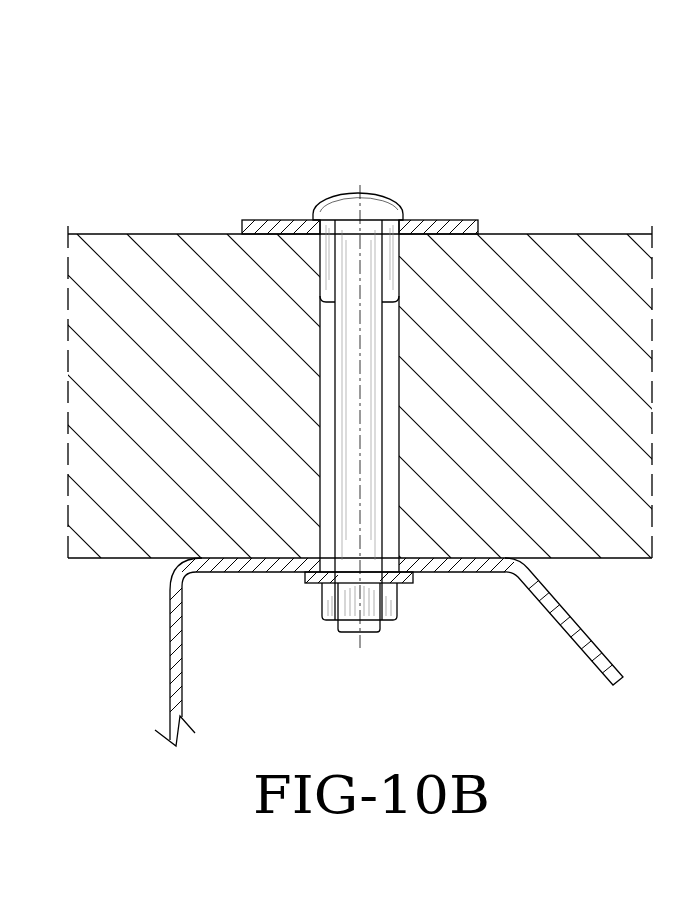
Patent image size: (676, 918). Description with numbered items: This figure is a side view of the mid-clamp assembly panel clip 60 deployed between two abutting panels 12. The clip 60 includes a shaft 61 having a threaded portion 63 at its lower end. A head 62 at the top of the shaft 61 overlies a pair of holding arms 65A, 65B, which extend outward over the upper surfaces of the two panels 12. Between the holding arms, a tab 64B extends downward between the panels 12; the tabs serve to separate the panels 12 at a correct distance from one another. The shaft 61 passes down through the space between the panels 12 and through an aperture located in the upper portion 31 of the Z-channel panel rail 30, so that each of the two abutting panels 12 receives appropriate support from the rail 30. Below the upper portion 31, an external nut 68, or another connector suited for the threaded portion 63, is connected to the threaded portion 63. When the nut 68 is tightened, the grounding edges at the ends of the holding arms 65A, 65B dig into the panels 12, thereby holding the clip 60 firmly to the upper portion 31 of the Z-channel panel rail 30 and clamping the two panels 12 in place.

The mid-clamp assembly panel clip 60 is at (326, 140).
The panel 12 is at (143, 283).
The holding arm 65A is at (240, 227).
The holding arm 65B is at (478, 228).
The head 62 is at (380, 195).
The tab 64B is at (390, 290).
The shaft 61 is at (352, 443).
The Z-channel panel rail 30 is at (178, 653).
The upper portion 31 is at (480, 568).
The external nut 68 is at (330, 595).
The threaded portion 63 is at (372, 627).